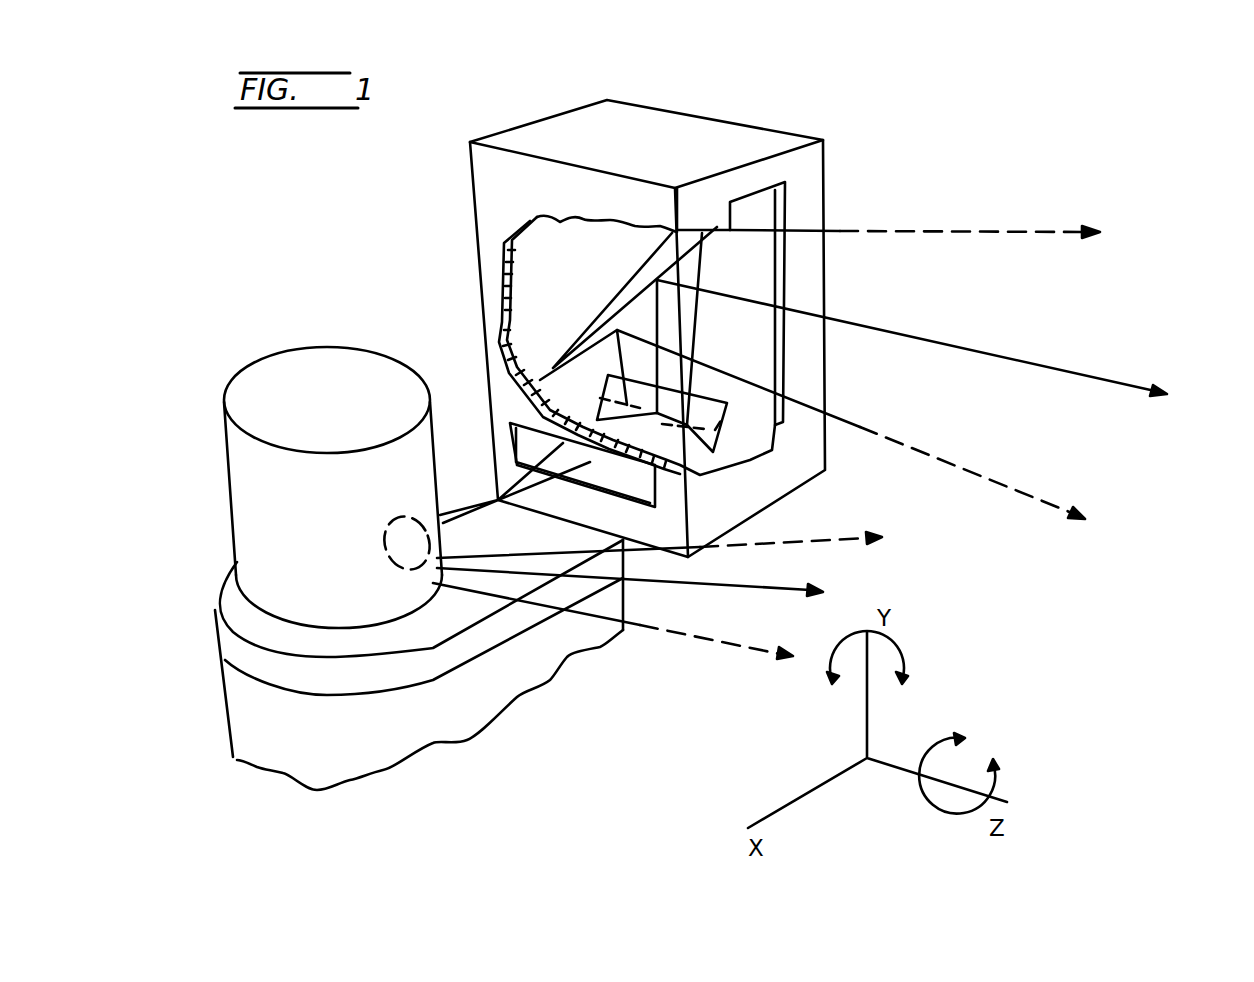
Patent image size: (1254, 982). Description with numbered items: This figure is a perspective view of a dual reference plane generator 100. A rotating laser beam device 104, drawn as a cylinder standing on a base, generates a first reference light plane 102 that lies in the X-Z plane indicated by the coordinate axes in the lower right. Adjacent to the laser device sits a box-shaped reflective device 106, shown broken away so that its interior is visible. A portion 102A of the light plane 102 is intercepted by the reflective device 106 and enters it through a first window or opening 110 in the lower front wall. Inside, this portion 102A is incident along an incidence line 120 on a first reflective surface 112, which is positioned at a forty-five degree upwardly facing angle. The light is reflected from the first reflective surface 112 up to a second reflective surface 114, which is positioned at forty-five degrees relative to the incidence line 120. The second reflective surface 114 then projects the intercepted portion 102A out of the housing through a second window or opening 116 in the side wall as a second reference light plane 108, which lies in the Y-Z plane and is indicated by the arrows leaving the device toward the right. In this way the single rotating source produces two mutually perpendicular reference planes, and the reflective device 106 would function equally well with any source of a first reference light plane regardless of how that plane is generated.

The dual reference plane generator 100 is at (394, 269).
The first reference light plane 102 is at (655, 648).
The portion of the light plane 102A is at (502, 472).
The rotating laser beam device 104 is at (236, 484).
The reflective device 106 is at (684, 135).
The second reference light plane 108 is at (1019, 208).
The first window or opening 110 is at (582, 480).
The first reflective surface 112 is at (722, 418).
The second reflective surface 114 is at (628, 278).
The second window or opening 116 is at (792, 297).
The incidence line 120 is at (701, 458).